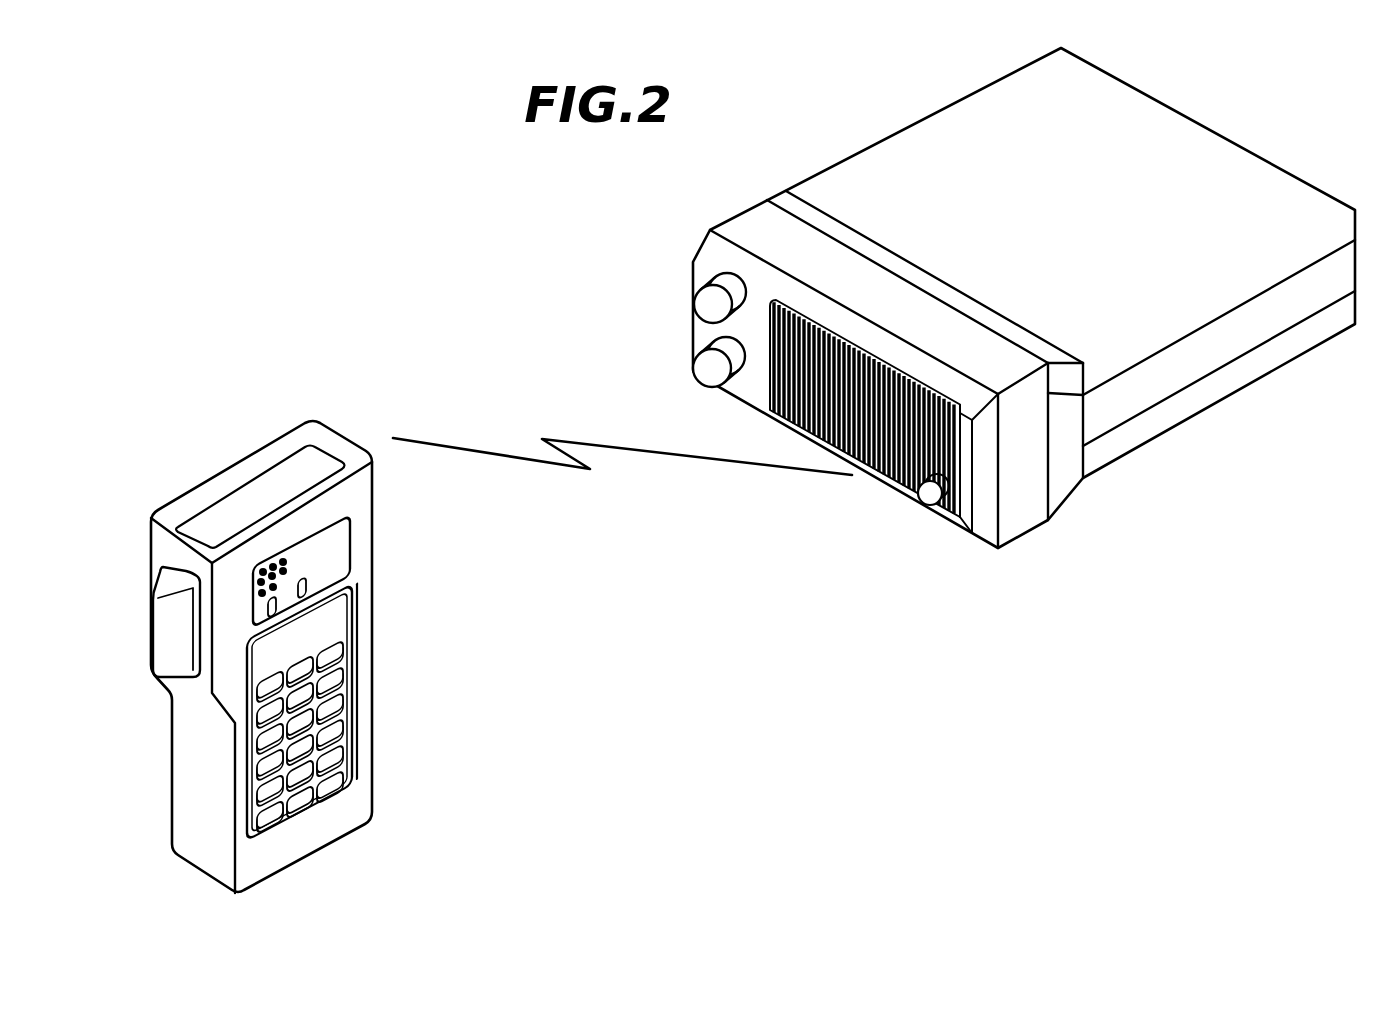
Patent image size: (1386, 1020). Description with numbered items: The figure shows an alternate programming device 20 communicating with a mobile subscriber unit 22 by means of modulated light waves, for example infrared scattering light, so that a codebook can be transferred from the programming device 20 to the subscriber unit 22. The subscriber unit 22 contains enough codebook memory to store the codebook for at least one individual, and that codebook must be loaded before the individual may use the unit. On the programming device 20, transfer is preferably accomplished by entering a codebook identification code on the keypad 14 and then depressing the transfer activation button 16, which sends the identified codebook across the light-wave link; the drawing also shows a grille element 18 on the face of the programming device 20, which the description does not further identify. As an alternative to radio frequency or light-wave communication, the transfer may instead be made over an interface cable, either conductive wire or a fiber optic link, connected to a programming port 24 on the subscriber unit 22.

The keypad 14 is at (350, 740).
The transfer activation button 16 is at (168, 637).
The speaker/microphone grille 18 is at (293, 558).
The programming device 20 is at (446, 900).
The subscriber unit 22 is at (1140, 551).
The programming port 24 is at (925, 503).